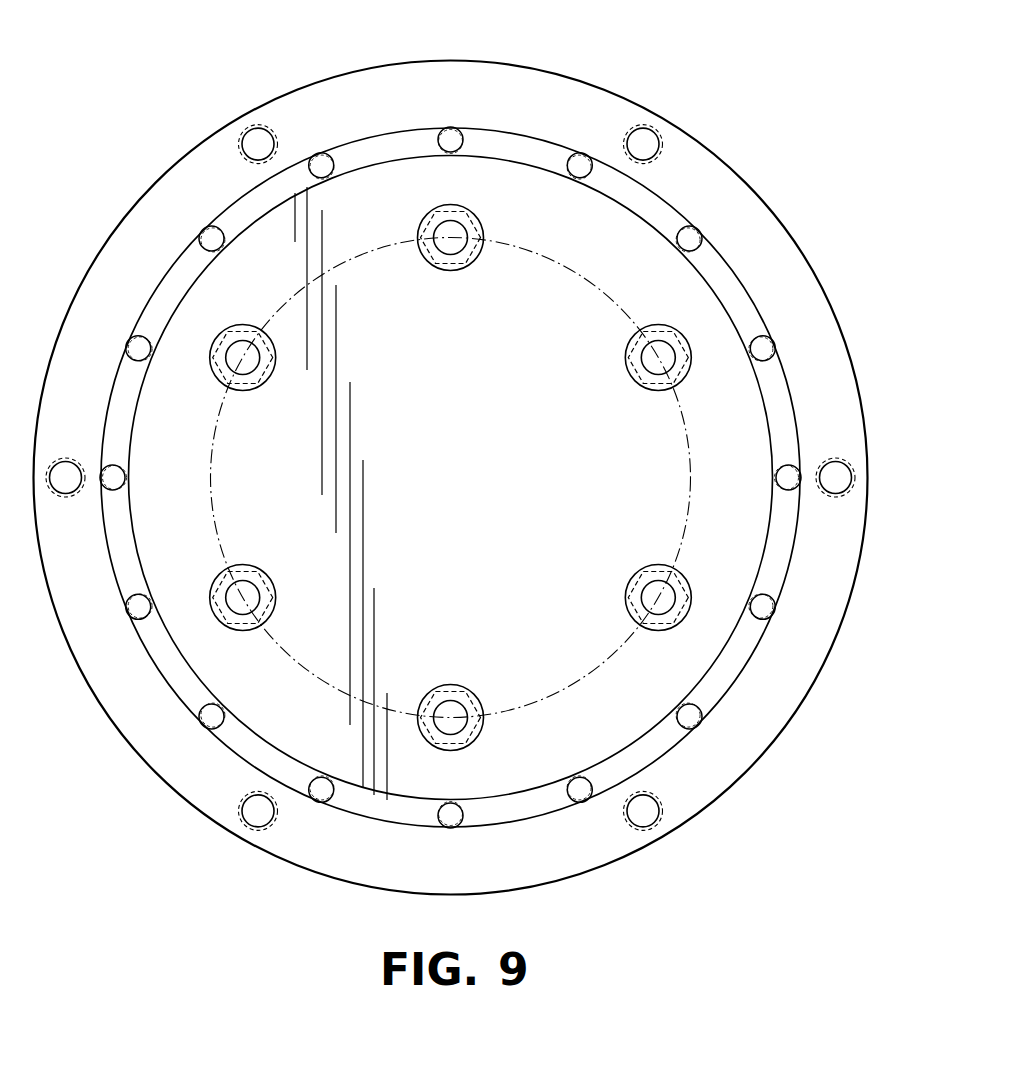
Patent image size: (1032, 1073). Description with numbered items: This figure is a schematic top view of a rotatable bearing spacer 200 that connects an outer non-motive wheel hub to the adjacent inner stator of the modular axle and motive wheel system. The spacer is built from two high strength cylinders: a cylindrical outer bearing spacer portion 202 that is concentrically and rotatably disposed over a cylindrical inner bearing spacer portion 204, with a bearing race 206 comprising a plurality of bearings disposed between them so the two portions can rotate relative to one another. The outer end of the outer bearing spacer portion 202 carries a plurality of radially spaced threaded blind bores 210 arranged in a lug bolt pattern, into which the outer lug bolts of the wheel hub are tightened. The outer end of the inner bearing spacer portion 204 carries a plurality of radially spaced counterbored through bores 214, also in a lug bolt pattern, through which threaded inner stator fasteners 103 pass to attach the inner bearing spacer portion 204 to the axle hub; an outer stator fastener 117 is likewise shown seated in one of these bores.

The rotatable bearing spacer 200 is at (208, 118).
The cylindrical outer bearing spacer portion 202 is at (823, 284).
The cylindrical inner bearing spacer portion 204 is at (710, 680).
The bearing race 206 is at (766, 596).
The threaded blind bore 210 is at (845, 461).
The counterbored through bore 214 is at (683, 340).
The threaded inner stator fastener 103 is at (660, 342).
The outer stator fastener 117 is at (444, 685).